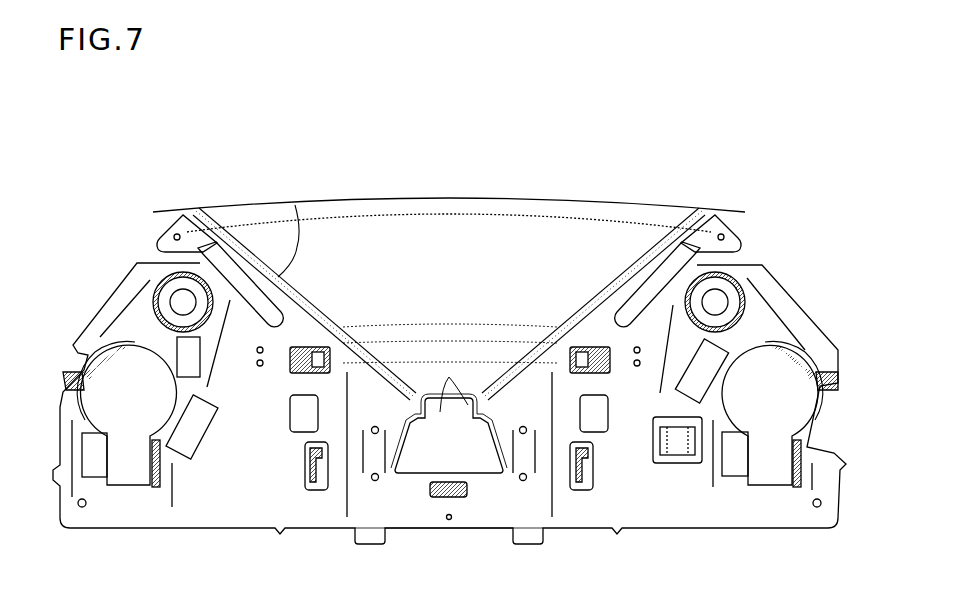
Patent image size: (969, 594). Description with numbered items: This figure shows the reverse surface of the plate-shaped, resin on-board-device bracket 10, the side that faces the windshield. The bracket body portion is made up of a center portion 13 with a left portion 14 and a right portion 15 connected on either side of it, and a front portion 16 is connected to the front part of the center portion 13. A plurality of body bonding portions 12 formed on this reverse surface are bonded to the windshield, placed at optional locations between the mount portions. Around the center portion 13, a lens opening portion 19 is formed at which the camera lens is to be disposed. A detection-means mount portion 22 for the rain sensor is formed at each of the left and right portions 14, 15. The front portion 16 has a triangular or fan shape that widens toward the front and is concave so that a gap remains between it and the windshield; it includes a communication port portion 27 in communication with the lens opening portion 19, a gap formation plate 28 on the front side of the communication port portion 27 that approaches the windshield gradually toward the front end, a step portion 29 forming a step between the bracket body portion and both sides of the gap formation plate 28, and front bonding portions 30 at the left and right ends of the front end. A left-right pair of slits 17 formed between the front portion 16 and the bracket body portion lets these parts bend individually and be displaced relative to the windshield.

The on-board-device bracket 10 is at (78, 158).
The body bonding portions 12 is at (121, 312).
The center portion 13 is at (423, 507).
The left portion 14 is at (150, 505).
The right portion 15 is at (750, 505).
The front portion 16 is at (483, 195).
The slits 17 is at (208, 240).
The lens opening portion 19 is at (467, 455).
The detection-means mount portion 22 is at (68, 378).
The communication port portion 27 is at (453, 405).
The gap formation plate 28 is at (381, 223).
The step portion 29 is at (296, 212).
The front bonding portions 30 is at (187, 220).